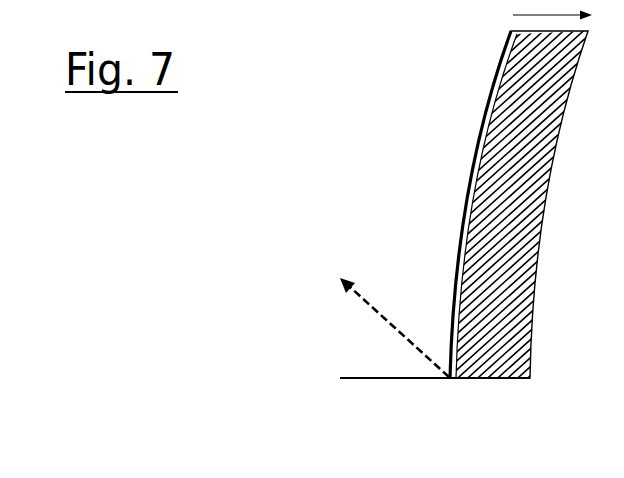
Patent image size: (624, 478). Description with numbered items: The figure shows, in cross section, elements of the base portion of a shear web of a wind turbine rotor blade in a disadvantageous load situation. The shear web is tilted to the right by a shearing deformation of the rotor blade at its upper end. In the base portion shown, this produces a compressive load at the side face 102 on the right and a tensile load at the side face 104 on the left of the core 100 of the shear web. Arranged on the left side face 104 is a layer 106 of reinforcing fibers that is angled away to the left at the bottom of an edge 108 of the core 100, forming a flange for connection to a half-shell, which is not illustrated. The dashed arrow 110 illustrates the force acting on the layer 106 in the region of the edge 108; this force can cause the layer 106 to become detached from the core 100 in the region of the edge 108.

The core 100 is at (557, 143).
The side face 102 is at (538, 255).
The side face 104 is at (477, 188).
The layer of reinforcing fibers 106 is at (482, 122).
The edge 108 is at (455, 382).
The dashed arrow 110 is at (373, 295).